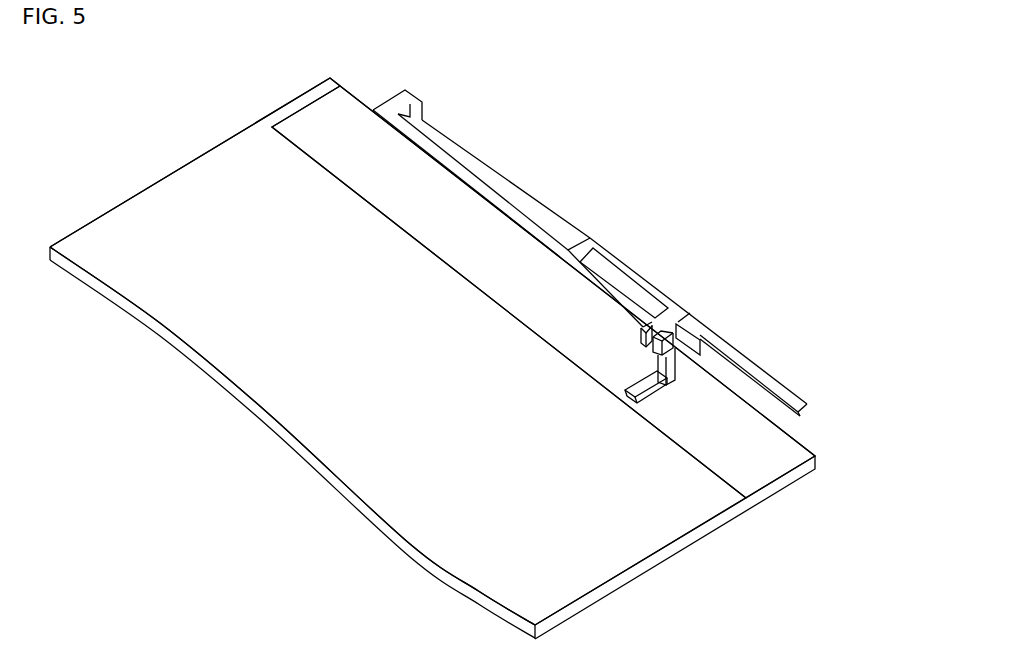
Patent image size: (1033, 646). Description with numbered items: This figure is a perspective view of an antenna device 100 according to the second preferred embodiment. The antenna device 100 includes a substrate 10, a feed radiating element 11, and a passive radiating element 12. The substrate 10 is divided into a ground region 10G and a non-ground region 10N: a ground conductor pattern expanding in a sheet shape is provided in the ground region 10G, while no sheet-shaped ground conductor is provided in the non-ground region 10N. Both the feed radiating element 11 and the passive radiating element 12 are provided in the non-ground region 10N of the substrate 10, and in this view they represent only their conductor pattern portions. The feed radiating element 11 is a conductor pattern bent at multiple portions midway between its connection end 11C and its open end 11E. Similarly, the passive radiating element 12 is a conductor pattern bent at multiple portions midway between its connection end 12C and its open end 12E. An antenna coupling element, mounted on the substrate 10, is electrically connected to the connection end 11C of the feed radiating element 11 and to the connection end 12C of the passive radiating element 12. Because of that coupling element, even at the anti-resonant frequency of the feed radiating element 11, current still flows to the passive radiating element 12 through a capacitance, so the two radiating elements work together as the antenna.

The antenna device 100 is at (732, 62).
The substrate 10 is at (810, 458).
The ground region 10G is at (205, 192).
The non-ground region 10N is at (314, 124).
The feed radiating element 11 is at (590, 239).
The open end 11E is at (705, 352).
The connection end 11C is at (632, 388).
The passive radiating element 12 is at (763, 377).
The open end 12E is at (812, 418).
The connection end 12C is at (643, 400).